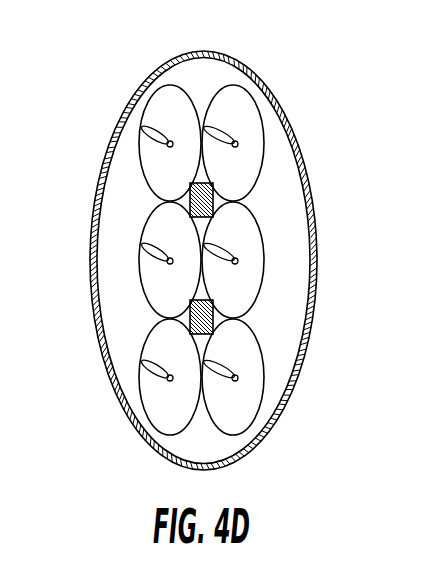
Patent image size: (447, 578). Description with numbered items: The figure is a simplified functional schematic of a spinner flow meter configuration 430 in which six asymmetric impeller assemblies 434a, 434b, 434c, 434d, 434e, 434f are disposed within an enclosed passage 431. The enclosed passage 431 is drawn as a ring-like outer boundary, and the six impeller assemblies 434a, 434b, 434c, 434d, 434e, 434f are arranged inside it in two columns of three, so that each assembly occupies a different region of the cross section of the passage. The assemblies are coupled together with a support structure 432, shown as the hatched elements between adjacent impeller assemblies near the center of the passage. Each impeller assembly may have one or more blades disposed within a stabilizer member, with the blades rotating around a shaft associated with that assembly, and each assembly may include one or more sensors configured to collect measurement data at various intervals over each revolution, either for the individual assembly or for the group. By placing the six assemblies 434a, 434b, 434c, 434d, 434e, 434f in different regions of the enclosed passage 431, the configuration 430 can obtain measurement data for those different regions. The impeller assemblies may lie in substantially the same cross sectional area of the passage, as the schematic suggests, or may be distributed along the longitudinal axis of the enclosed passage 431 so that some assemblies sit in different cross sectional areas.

The configuration 430 is at (104, 76).
The enclosed passage 431 is at (297, 137).
The support structure 432 is at (190, 200).
The asymmetric impeller assembly 434a is at (147, 99).
The asymmetric impeller assembly 434b is at (143, 228).
The asymmetric impeller assembly 434c is at (142, 405).
The asymmetric impeller assembly 434d is at (256, 101).
The asymmetric impeller assembly 434e is at (259, 227).
The asymmetric impeller assembly 434f is at (260, 403).